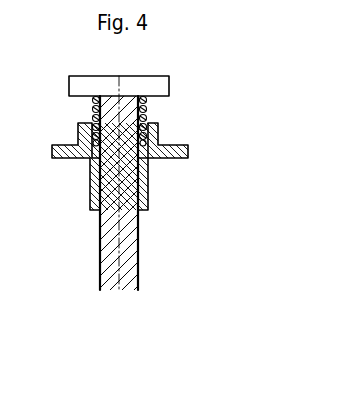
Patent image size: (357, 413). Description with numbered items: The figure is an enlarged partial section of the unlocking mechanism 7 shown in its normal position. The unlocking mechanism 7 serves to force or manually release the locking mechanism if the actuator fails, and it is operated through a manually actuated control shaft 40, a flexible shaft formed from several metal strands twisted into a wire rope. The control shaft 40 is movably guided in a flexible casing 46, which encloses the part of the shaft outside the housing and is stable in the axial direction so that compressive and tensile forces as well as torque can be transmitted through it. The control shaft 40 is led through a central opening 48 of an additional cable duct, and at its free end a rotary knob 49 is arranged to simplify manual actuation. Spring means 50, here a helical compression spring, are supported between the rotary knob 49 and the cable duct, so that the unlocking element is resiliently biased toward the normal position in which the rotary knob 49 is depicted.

The unlocking mechanism 7 is at (95, 226).
The control shaft 40 is at (125, 270).
The casing 46 is at (140, 253).
The central opening 48 is at (148, 187).
The rotary knob 49 is at (153, 77).
The spring means 50 is at (146, 108).